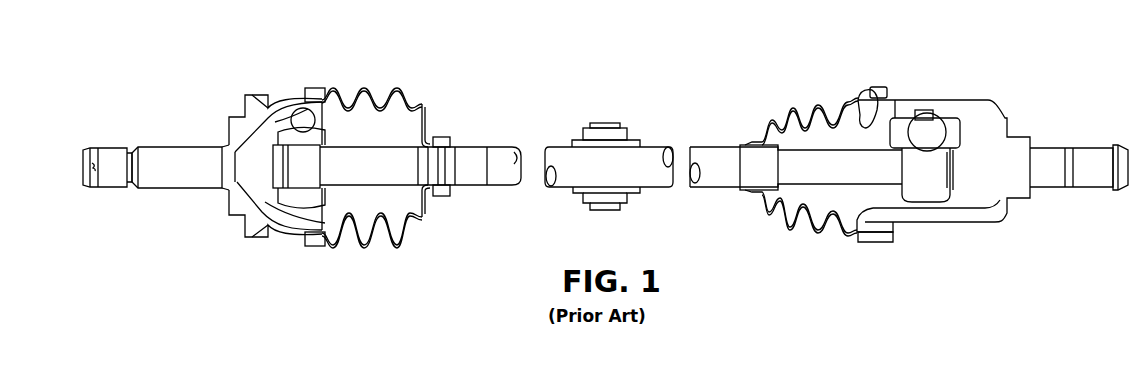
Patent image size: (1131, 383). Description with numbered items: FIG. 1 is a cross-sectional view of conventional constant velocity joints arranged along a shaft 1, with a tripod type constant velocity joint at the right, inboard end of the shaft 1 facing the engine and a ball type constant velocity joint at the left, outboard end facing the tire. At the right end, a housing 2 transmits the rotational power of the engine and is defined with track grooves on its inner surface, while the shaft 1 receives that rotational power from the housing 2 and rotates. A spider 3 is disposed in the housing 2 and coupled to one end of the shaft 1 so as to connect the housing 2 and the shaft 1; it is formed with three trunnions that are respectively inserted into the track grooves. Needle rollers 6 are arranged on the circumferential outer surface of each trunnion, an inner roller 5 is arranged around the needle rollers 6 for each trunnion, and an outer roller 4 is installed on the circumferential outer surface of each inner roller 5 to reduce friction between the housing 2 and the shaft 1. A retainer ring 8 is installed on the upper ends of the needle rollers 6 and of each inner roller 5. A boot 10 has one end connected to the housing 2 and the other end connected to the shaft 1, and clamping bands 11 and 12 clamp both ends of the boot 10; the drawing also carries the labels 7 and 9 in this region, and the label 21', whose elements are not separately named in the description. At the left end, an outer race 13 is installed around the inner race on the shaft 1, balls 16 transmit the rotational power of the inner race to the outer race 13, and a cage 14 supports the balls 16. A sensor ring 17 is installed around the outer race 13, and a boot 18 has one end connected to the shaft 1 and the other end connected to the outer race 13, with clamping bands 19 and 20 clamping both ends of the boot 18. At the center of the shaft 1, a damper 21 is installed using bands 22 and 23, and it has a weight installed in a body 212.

The shaft 1 is at (498, 145).
The housing 2 is at (1007, 120).
The spider 3 is at (934, 112).
The outer roller 4 is at (858, 95).
The inner roller 5 is at (360, 92).
The needle rollers 6 is at (921, 113).
The snap ring 7 is at (944, 115).
The retainer ring 8 is at (952, 137).
The outer race 9 is at (948, 142).
The boot 10 is at (790, 107).
The clamping band 11 is at (880, 87).
The clamping band 12 is at (750, 140).
The outer race 13 is at (172, 147).
The cage 14 is at (333, 90).
The balls 16 is at (300, 108).
The sensor ring 17 is at (247, 95).
The boot 18 is at (403, 112).
The clamping band 19 is at (436, 134).
The clamping band 20 is at (313, 88).
The damper 21 is at (601, 112).
The bearing 21' is at (606, 94).
The body 212 is at (618, 127).
The band 22 is at (565, 143).
The band 23 is at (637, 142).